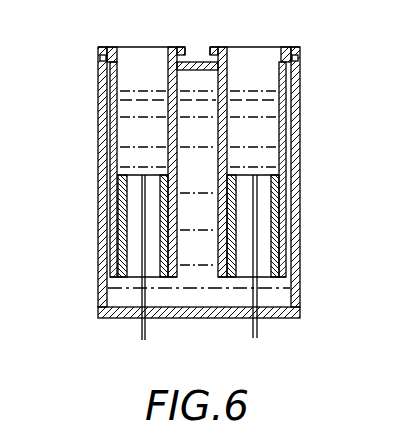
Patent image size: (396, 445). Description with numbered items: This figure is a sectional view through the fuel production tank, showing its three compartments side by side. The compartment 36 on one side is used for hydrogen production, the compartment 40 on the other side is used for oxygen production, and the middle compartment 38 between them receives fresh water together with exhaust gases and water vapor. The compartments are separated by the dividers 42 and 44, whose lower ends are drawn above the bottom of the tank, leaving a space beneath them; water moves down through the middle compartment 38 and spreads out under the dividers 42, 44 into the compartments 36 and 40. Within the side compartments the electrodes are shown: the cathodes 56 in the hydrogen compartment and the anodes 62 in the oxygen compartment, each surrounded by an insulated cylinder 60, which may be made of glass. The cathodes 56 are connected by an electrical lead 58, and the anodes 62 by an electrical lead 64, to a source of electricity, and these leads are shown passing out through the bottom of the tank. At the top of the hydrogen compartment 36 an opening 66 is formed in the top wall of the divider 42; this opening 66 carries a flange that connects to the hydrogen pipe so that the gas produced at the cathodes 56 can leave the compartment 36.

The compartment 36 is at (270, 127).
The middle compartment 38 is at (197, 127).
The compartment 40 is at (137, 156).
The divider 42 is at (226, 158).
The divider 44 is at (167, 135).
The cathode 56 is at (257, 224).
The electrical lead 58 is at (255, 328).
The insulated cylinder 60 is at (123, 258).
The anode 62 is at (140, 200).
The electrical lead 64 is at (143, 327).
The opening 66 is at (254, 50).